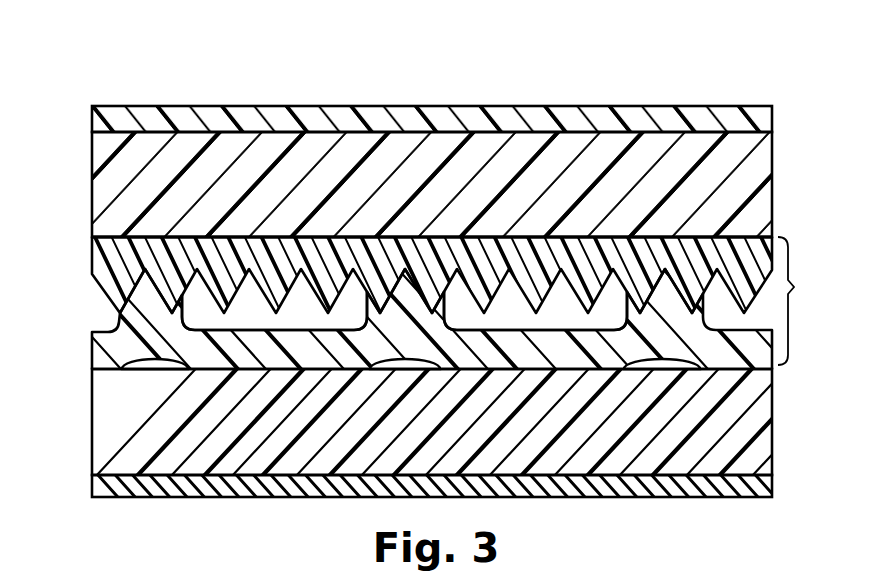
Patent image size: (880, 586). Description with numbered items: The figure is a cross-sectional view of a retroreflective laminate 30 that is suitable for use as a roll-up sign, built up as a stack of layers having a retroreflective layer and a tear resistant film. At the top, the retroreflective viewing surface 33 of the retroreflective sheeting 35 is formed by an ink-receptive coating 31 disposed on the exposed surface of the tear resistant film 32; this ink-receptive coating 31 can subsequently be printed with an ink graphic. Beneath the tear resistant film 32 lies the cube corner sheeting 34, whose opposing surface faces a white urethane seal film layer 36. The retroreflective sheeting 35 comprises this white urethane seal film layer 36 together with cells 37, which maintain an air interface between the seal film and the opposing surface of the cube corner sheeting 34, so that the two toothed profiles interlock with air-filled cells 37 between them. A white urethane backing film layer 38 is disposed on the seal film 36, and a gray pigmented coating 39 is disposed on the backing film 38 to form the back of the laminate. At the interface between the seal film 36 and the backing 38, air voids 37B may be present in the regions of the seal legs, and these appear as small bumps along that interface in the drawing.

The retroreflective laminate 30 is at (447, 288).
The ink-receptive coating 31 is at (183, 113).
The tear resistant film 32 is at (106, 188).
The retroreflective viewing surface 33 is at (751, 234).
The cube corner sheeting 34 is at (128, 257).
The retroreflective sheeting 35 is at (806, 301).
The white urethane seal film layer 36 is at (121, 337).
The cells 37 is at (231, 326).
The air voids 37B is at (165, 362).
The white urethane backing film layer 38 is at (133, 427).
The gray pigmented coating 39 is at (113, 483).